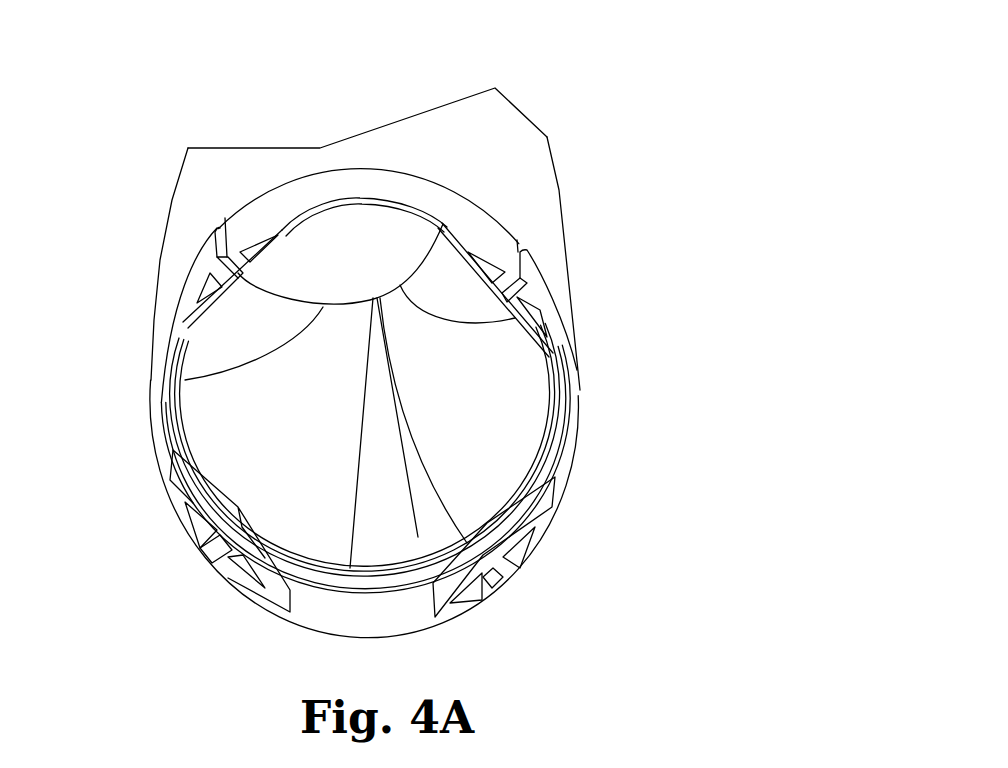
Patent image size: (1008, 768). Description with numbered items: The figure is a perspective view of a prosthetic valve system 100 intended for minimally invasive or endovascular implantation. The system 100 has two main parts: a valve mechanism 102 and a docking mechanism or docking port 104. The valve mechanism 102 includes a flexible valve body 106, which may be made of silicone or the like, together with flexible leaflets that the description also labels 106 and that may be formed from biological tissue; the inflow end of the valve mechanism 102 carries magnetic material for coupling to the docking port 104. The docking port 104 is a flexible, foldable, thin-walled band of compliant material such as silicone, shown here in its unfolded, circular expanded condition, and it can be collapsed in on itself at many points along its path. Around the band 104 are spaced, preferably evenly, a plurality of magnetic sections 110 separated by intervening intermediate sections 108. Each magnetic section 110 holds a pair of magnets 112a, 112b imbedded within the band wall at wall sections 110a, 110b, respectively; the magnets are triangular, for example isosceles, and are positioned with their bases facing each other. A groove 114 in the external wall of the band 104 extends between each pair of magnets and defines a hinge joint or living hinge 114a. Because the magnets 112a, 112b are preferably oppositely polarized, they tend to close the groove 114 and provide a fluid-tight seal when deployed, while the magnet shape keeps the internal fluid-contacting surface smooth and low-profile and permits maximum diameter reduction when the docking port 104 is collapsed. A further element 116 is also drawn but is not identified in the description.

The prosthetic valve system 100 is at (603, 172).
The valve mechanism 102 is at (523, 145).
The docking port 104 is at (337, 165).
The valve body 106 is at (493, 103).
The intermediate sections 108 is at (403, 188).
The magnetic sections 110 is at (572, 527).
The wall section 110a is at (193, 280).
The wall section 110b is at (270, 228).
The magnet 112a is at (235, 577).
The magnet 112b is at (195, 532).
The groove 114 is at (530, 238).
The living hinge 114a is at (242, 515).
The lens 116 is at (463, 367).